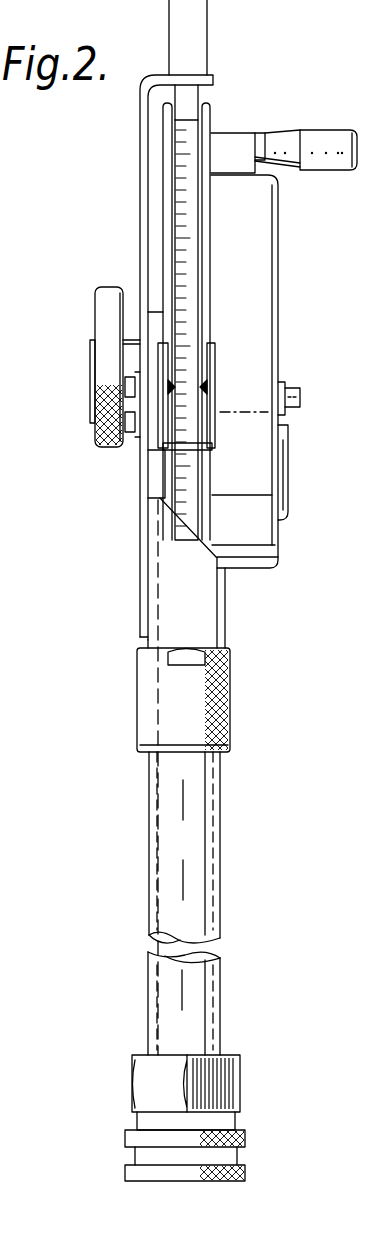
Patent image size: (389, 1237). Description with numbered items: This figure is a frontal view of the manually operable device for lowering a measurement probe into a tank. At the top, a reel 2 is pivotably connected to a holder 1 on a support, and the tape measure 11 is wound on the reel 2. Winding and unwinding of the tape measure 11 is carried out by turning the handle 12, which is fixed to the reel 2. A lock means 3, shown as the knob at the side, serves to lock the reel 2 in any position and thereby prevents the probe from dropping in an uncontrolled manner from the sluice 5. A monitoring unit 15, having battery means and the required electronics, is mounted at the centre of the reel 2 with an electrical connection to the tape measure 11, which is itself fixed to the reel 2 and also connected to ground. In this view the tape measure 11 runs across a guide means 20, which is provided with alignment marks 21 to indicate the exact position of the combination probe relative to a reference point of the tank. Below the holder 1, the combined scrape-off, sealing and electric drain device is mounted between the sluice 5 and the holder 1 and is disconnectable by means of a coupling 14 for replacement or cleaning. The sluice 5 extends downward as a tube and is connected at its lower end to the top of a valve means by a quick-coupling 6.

The holder 1 is at (139, 110).
The reel 2 is at (212, 122).
The lock means 3 is at (108, 300).
The sluice 5 is at (209, 831).
The quick-coupling 6 is at (239, 1057).
The tape measure 11 is at (188, 297).
The handle 12 is at (335, 162).
The coupling 14 is at (229, 710).
The monitoring unit 15 is at (279, 296).
The guide means 20 is at (214, 436).
The alignment marks 21 is at (210, 389).